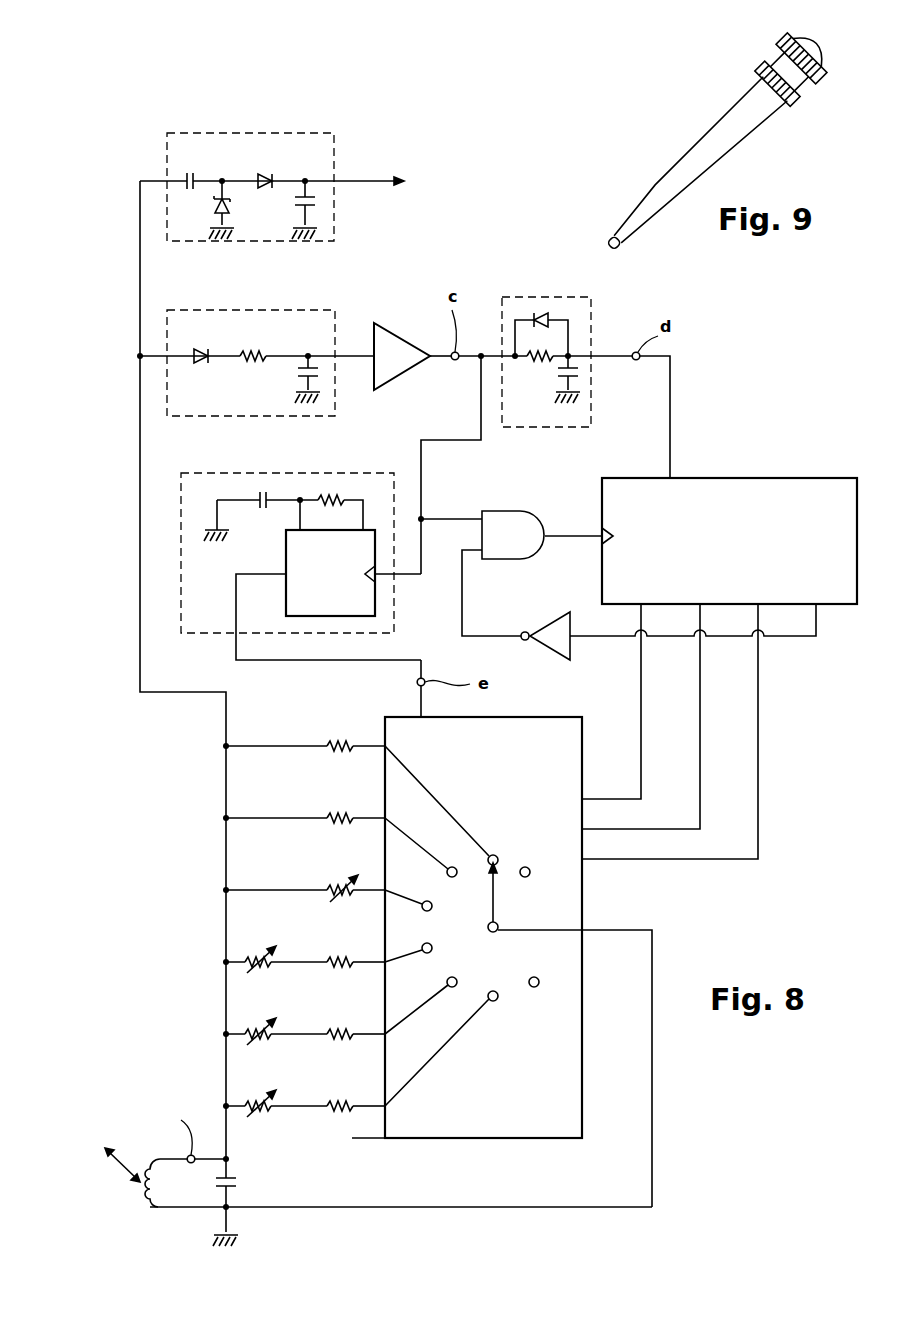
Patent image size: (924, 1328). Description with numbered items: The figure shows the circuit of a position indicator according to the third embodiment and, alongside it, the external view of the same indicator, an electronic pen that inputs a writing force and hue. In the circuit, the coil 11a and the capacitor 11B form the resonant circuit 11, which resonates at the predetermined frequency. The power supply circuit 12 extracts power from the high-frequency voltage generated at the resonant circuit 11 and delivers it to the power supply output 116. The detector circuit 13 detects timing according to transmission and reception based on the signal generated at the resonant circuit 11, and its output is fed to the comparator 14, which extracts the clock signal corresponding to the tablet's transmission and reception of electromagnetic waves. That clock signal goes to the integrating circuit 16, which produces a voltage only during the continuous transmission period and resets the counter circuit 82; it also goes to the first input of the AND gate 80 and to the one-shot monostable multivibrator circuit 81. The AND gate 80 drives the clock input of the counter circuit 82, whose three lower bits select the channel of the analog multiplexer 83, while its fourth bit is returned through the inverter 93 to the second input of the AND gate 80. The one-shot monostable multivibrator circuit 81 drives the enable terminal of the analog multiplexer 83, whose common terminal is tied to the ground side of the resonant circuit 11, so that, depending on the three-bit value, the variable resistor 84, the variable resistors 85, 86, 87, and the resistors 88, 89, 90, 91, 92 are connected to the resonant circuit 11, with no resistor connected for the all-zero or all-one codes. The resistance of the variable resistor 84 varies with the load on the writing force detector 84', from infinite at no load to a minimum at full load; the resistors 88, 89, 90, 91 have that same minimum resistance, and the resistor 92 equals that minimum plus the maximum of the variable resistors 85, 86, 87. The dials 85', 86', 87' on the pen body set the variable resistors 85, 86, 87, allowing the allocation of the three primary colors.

In FIG. 8, the resonant circuit 11 is at (368, 1171).
In FIG. 8, the coil 11a is at (150, 1200).
In FIG. 8, the capacitor 11B is at (240, 1180).
In FIG. 8, the power supply circuit 12 is at (334, 210).
In FIG. 8, the detector circuit 13 is at (335, 326).
In FIG. 8, the comparator 14 is at (406, 318).
In FIG. 8, the integrating circuit 16 is at (531, 297).
In FIG. 8, the AND gate 80 is at (500, 511).
In FIG. 8, the one-shot monostable multivibrator circuit 81 is at (245, 473).
In FIG. 8, the counter circuit 82 is at (760, 478).
In FIG. 8, the analog multiplexer 83 is at (582, 890).
In FIG. 8, the variable resistor 84 is at (304, 894).
In FIG. 8, the variable resistor 85 is at (275, 973).
In FIG. 8, the variable resistor 86 is at (275, 1045).
In FIG. 8, the variable resistor 87 is at (275, 1125).
In FIG. 8, the resistor 88 is at (338, 970).
In FIG. 8, the resistor 89 is at (338, 1042).
In FIG. 8, the resistor 90 is at (340, 1116).
In FIG. 8, the resistor 91 is at (342, 753).
In FIG. 8, the resistor 92 is at (345, 826).
In FIG. 8, the inverter 93 is at (548, 650).
In FIG. 8, the power supply 116 is at (415, 159).
In FIG. 9, the writing force detector 84' is at (705, 160).
In FIG. 9, the dial 85' is at (751, 74).
In FIG. 9, the dial 86' is at (816, 80).
In FIG. 9, the dial 87' is at (784, 51).